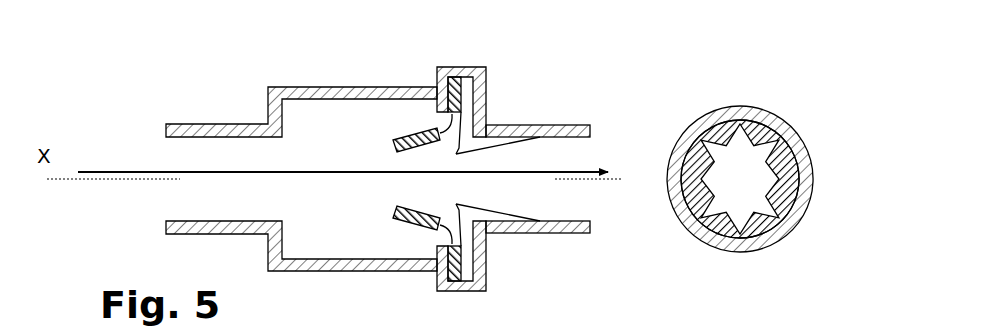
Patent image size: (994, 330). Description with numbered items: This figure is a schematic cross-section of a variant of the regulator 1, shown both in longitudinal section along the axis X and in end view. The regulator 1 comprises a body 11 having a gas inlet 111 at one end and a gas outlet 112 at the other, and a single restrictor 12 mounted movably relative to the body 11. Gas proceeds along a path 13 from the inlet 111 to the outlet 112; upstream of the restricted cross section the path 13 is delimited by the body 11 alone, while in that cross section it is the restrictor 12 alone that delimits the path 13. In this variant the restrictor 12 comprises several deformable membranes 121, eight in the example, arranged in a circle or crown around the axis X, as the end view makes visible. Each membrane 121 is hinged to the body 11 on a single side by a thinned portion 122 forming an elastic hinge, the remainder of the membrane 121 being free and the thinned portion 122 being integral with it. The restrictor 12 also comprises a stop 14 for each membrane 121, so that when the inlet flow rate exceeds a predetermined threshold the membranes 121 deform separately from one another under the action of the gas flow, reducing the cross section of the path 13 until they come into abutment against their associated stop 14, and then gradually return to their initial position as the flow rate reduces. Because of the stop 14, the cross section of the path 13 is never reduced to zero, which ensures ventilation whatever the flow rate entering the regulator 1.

The regulator 1 is at (200, 88).
The body 11 is at (340, 86).
The gas inlet 111 is at (166, 207).
The gas outlet 112 is at (594, 207).
The restrictor 12 is at (434, 99).
The deformable membrane 121 is at (393, 142).
The thinned portion 122 is at (464, 116).
The path 13 is at (326, 230).
The stop 14 is at (495, 148).